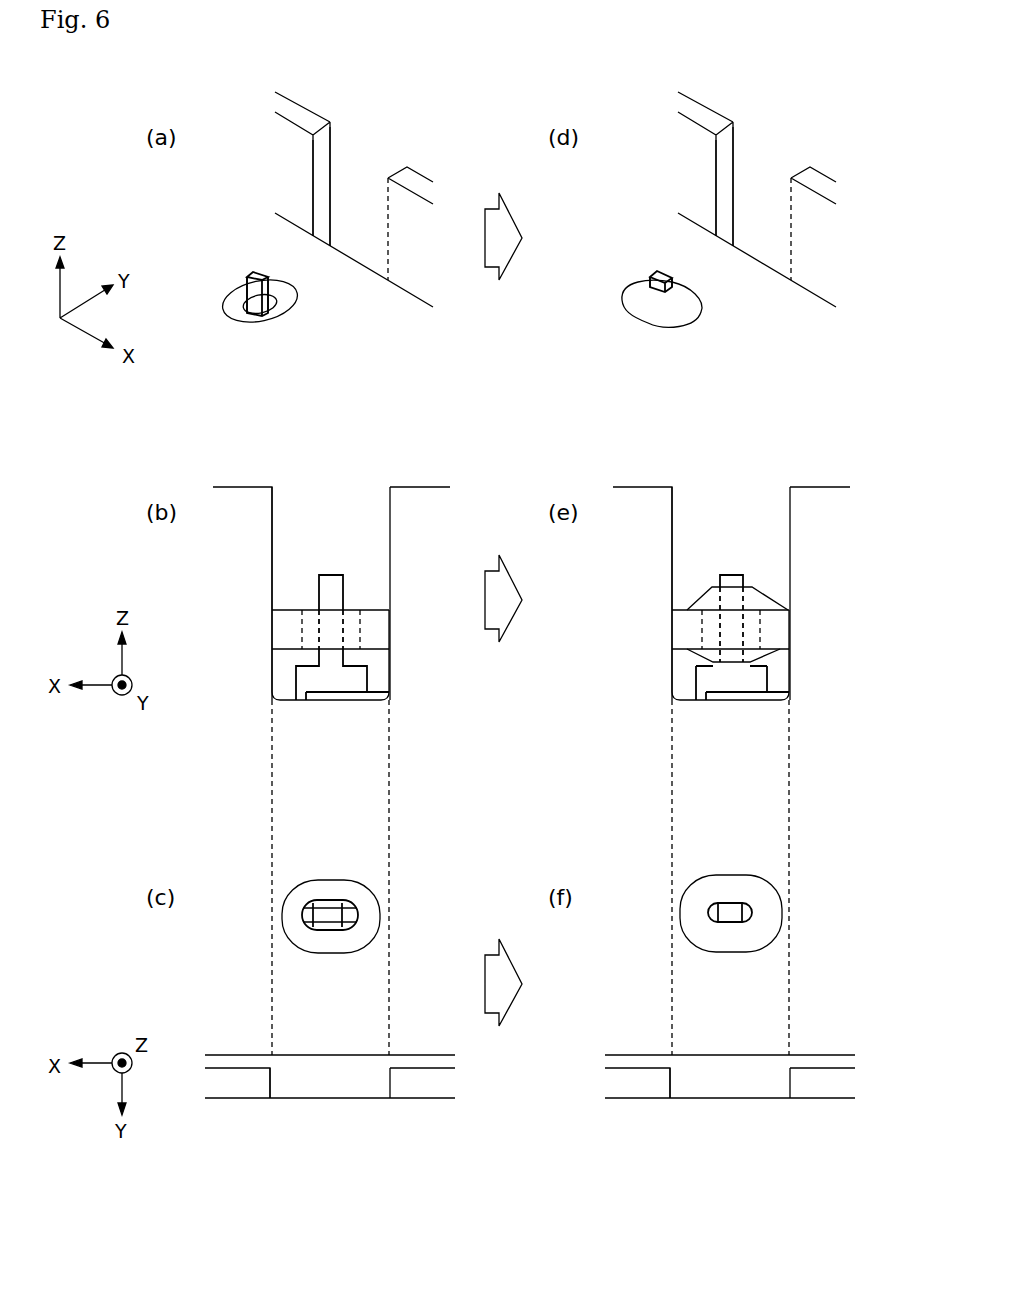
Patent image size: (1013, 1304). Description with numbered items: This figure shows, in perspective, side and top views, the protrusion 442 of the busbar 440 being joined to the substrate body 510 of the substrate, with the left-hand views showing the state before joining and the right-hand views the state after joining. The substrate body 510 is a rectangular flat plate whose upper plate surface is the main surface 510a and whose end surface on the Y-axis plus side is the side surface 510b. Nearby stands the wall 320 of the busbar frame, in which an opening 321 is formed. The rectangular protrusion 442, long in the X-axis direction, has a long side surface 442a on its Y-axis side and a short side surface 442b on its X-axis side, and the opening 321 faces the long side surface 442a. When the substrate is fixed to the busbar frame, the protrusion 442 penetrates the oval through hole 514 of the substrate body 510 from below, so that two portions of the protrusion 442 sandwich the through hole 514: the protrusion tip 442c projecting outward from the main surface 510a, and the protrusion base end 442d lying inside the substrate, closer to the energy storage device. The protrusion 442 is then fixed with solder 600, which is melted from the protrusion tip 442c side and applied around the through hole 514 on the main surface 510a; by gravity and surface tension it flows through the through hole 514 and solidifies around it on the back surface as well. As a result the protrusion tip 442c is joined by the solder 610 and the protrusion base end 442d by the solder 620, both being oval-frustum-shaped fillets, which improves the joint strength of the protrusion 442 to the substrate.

The wall 320 is at (300, 101).
The opening 321 is at (327, 163).
The busbar 440 is at (513, 601).
The protrusion 442 is at (260, 272).
The long side surface 442a is at (247, 285).
The short side surface 442b is at (268, 290).
The protrusion tip 442c is at (337, 600).
The protrusion base end 442d is at (337, 653).
The substrate body 510 is at (507, 672).
The main surface 510a is at (420, 344).
The side surface 510b is at (360, 257).
The through hole 514 is at (245, 302).
The solder 600 is at (675, 624).
The solder 610 is at (645, 300).
The solder 620 is at (712, 657).